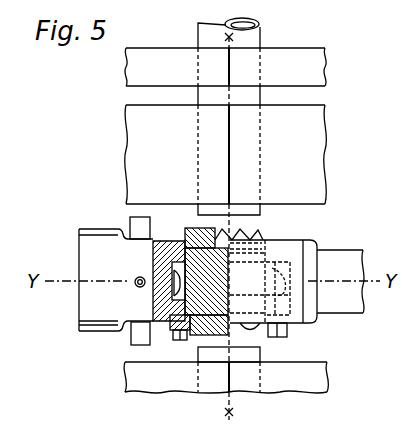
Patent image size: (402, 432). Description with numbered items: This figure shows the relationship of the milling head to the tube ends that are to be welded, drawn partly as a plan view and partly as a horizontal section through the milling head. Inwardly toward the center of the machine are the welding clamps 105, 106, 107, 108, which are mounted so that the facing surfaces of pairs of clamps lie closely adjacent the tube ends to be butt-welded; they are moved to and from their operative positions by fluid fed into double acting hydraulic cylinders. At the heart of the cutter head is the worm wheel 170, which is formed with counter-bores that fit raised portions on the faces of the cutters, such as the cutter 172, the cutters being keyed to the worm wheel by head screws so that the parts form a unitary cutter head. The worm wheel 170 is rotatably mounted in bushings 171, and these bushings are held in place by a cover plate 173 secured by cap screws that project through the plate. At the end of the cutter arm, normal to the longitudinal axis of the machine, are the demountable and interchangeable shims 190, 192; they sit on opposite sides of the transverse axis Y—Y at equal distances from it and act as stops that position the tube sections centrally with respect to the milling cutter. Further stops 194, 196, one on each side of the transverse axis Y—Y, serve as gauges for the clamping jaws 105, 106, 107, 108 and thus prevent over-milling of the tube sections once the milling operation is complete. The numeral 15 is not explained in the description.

The upright post 15 is at (300, 190).
The welding clamp 105 is at (177, 154).
The welding clamp 106 is at (278, 154).
The welding clamp 107 is at (176, 378).
The welding clamp 108 is at (279, 377).
The worm wheel 170 is at (178, 287).
The bushings 171 is at (153, 253).
The cutter 172 is at (200, 325).
The cover plate 173 is at (165, 337).
The shim 190 is at (82, 229).
The shim 192 is at (86, 330).
The stop 194 is at (131, 225).
The stop 196 is at (143, 332).